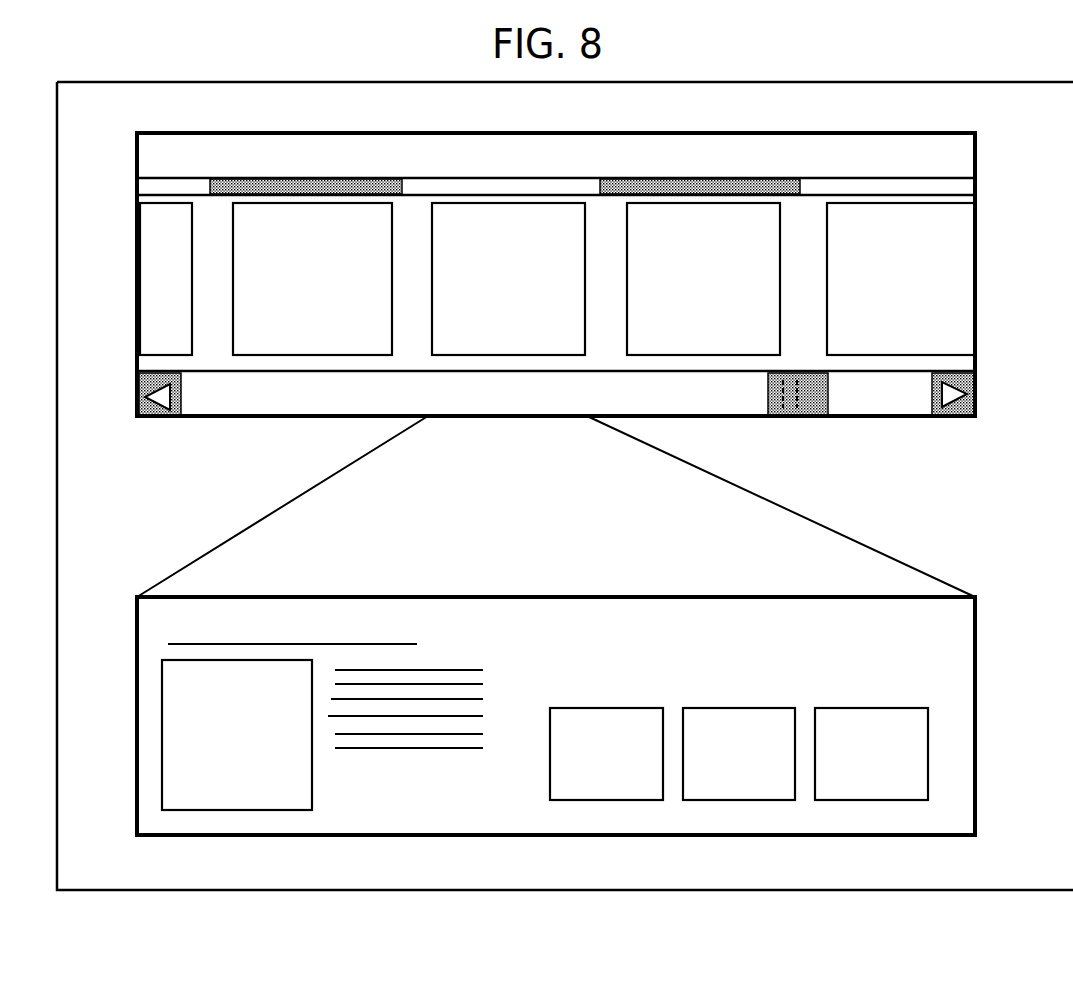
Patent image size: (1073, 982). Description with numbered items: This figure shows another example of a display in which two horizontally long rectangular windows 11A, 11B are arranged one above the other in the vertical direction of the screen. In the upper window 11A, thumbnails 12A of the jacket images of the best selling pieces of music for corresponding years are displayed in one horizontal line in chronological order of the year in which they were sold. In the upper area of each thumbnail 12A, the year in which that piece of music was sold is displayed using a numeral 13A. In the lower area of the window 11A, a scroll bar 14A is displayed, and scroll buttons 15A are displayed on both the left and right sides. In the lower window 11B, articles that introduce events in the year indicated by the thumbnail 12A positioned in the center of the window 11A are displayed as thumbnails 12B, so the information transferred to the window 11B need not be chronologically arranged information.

The window 11A is at (565, 279).
The thumbnails 12A is at (313, 356).
The numeral 13A is at (297, 152).
The scroll bar 14A is at (795, 407).
The scroll buttons 15A is at (165, 400).
The window 11B is at (1010, 690).
The thumbnails 12B is at (545, 713).